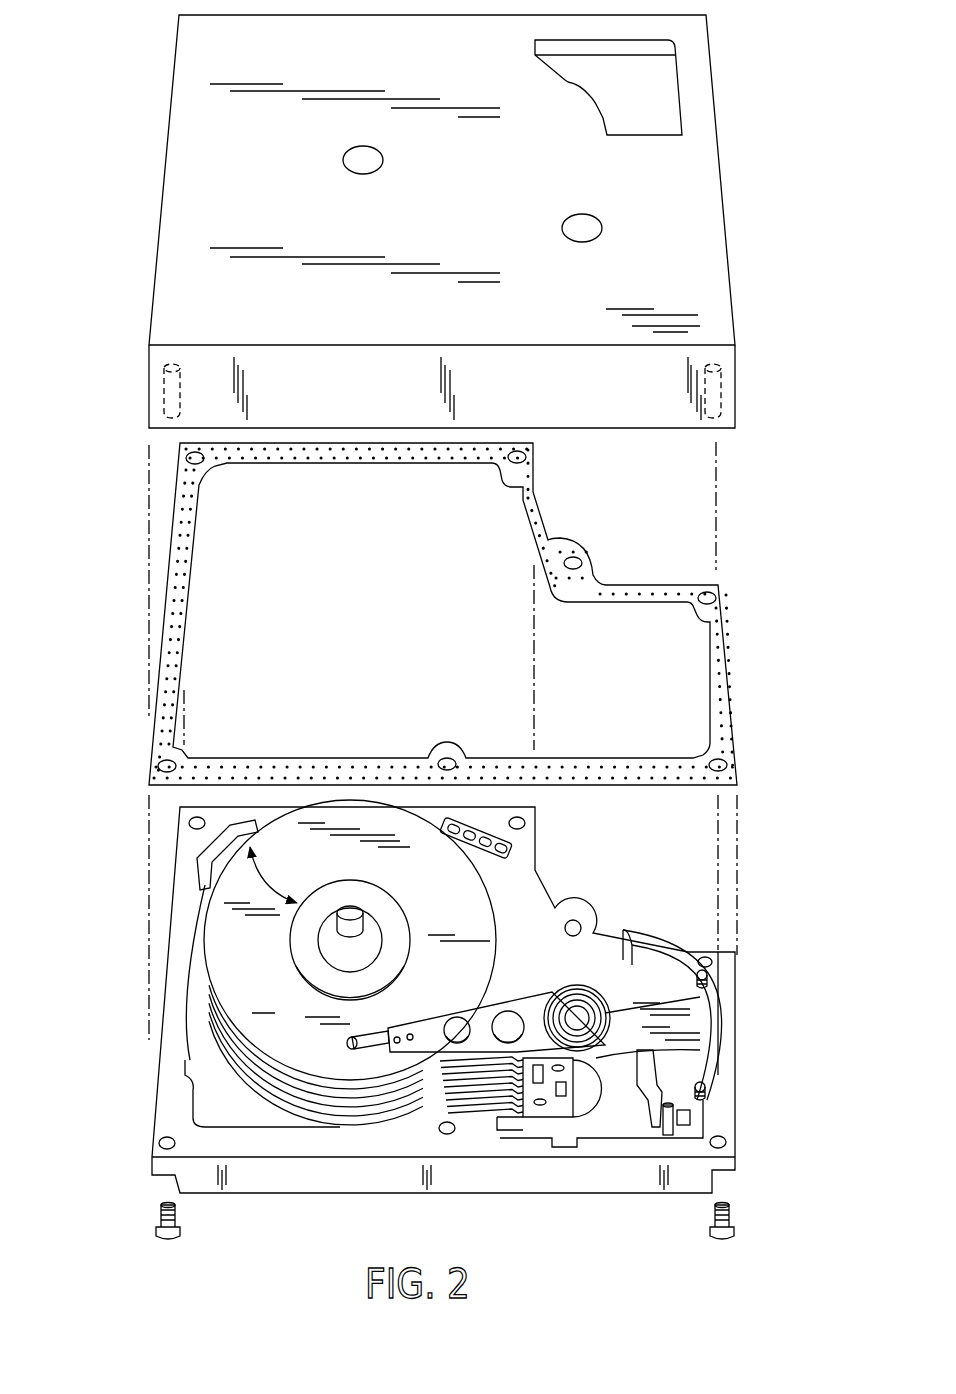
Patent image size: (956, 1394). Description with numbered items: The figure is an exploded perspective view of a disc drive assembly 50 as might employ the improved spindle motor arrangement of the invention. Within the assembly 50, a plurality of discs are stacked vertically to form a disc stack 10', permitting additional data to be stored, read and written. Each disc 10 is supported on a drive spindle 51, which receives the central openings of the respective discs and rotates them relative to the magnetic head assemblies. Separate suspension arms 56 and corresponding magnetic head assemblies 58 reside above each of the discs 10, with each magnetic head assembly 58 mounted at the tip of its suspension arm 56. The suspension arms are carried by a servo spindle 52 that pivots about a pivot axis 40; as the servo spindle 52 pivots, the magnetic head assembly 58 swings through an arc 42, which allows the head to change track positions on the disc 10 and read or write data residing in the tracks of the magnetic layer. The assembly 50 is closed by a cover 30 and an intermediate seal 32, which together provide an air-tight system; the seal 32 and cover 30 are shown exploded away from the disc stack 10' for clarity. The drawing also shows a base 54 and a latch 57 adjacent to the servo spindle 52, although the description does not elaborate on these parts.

The disc drive assembly 50 is at (133, 87).
The cover 30 is at (723, 192).
The intermediate seal 32 is at (722, 665).
The disc stack 10' is at (266, 940).
The disc 10 is at (316, 1055).
The arc 42 is at (268, 872).
The drive spindle 51 is at (327, 942).
The servo spindle 52 is at (590, 993).
The pivot axis 40 is at (712, 1023).
The latch 57 is at (640, 1057).
The base 54 is at (483, 1113).
The suspension arm 56 is at (380, 1047).
The magnetic head assembly 58 is at (353, 1047).